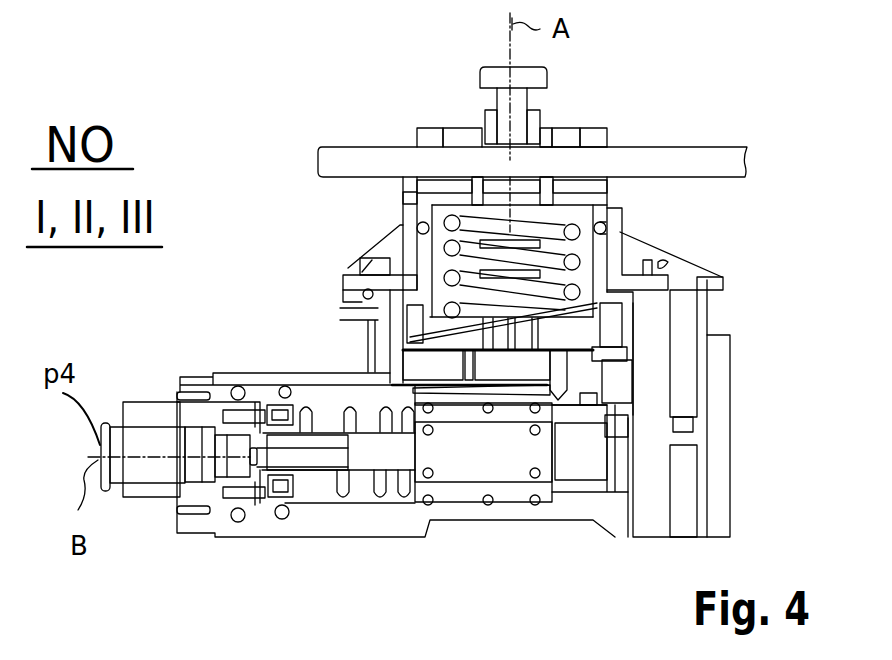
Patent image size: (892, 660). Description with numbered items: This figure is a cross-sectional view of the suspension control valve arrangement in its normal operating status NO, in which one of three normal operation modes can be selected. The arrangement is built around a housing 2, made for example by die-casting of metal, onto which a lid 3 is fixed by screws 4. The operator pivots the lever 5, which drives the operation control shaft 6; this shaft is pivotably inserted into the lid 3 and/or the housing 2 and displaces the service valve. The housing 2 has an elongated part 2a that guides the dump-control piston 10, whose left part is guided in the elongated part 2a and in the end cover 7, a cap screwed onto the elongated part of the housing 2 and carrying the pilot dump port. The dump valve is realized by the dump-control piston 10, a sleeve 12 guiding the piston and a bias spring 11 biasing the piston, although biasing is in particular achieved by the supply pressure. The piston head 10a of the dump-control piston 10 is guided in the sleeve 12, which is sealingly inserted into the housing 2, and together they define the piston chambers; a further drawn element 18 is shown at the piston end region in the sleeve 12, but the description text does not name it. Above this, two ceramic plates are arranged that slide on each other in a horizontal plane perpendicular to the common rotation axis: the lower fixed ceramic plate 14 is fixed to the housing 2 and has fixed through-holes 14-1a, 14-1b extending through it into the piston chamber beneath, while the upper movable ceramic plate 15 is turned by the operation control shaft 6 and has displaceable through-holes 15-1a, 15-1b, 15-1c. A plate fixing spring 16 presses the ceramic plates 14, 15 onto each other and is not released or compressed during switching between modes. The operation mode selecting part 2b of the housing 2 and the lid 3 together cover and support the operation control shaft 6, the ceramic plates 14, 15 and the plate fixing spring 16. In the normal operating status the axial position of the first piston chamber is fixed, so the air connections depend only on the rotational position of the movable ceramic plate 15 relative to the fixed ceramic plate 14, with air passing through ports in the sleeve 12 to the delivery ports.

The housing 2 is at (650, 527).
The elongated part of the housing 2a is at (242, 378).
The operation mode selecting part 2b is at (378, 317).
The lid 3 is at (723, 283).
The screws 4 is at (717, 255).
The lever 5 is at (704, 160).
The operation control shaft 6 is at (607, 247).
The end cover 7 is at (223, 510).
The dump-control piston 10 is at (373, 458).
The piston head 10a is at (477, 460).
The bias spring 11 is at (352, 493).
The sleeve 12 is at (517, 493).
The fixed ceramic plate 14 is at (418, 365).
The fixed through-hole 14-1a is at (553, 362).
The fixed through-hole 14-1b is at (562, 378).
The movable ceramic plate 15 is at (418, 332).
The displaceable through-hole 15-1a is at (493, 337).
The displaceable through-hole 15-1b is at (512, 340).
The displaceable through-hole 15-1c is at (535, 342).
The plate fixing spring 16 is at (400, 227).
The piston head 18 is at (588, 457).